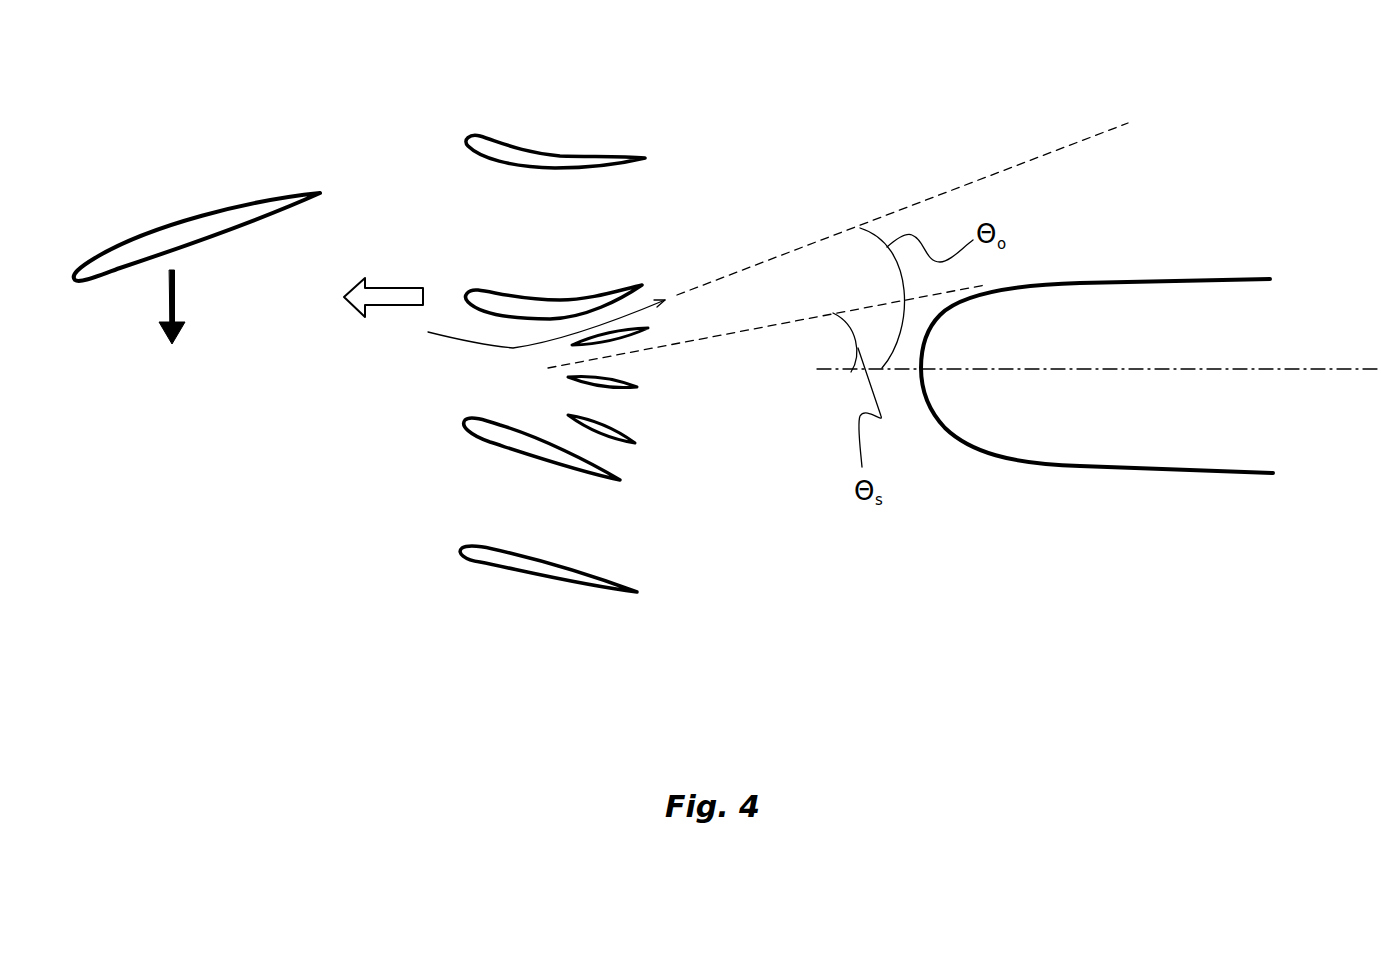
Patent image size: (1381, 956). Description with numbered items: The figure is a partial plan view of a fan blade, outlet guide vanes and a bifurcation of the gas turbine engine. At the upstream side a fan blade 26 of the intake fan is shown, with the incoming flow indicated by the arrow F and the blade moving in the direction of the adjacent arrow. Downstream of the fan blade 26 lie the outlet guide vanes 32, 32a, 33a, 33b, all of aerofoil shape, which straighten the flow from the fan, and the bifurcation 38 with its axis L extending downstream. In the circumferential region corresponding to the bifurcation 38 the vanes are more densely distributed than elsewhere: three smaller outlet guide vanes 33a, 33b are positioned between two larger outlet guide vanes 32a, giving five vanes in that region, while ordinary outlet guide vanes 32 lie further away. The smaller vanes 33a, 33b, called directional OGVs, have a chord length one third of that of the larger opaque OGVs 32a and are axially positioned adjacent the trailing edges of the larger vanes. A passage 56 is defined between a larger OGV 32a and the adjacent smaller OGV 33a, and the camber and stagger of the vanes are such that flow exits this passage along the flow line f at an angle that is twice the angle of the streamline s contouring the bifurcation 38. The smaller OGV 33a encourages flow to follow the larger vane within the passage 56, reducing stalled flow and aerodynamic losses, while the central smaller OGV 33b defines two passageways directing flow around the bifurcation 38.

The fan blade 26 is at (203, 222).
The outlet guide vane 32 is at (643, 158).
The larger outlet guide vane 32a is at (642, 284).
The smaller outlet guide vane 33a is at (648, 329).
The smaller outlet guide vane 33b is at (637, 381).
The bifurcation 38 is at (1053, 277).
The passage 56 is at (586, 332).
The airflow direction F is at (383, 282).
The flow line f is at (975, 182).
The second reference line s is at (803, 318).
The pylon axis L is at (1099, 357).